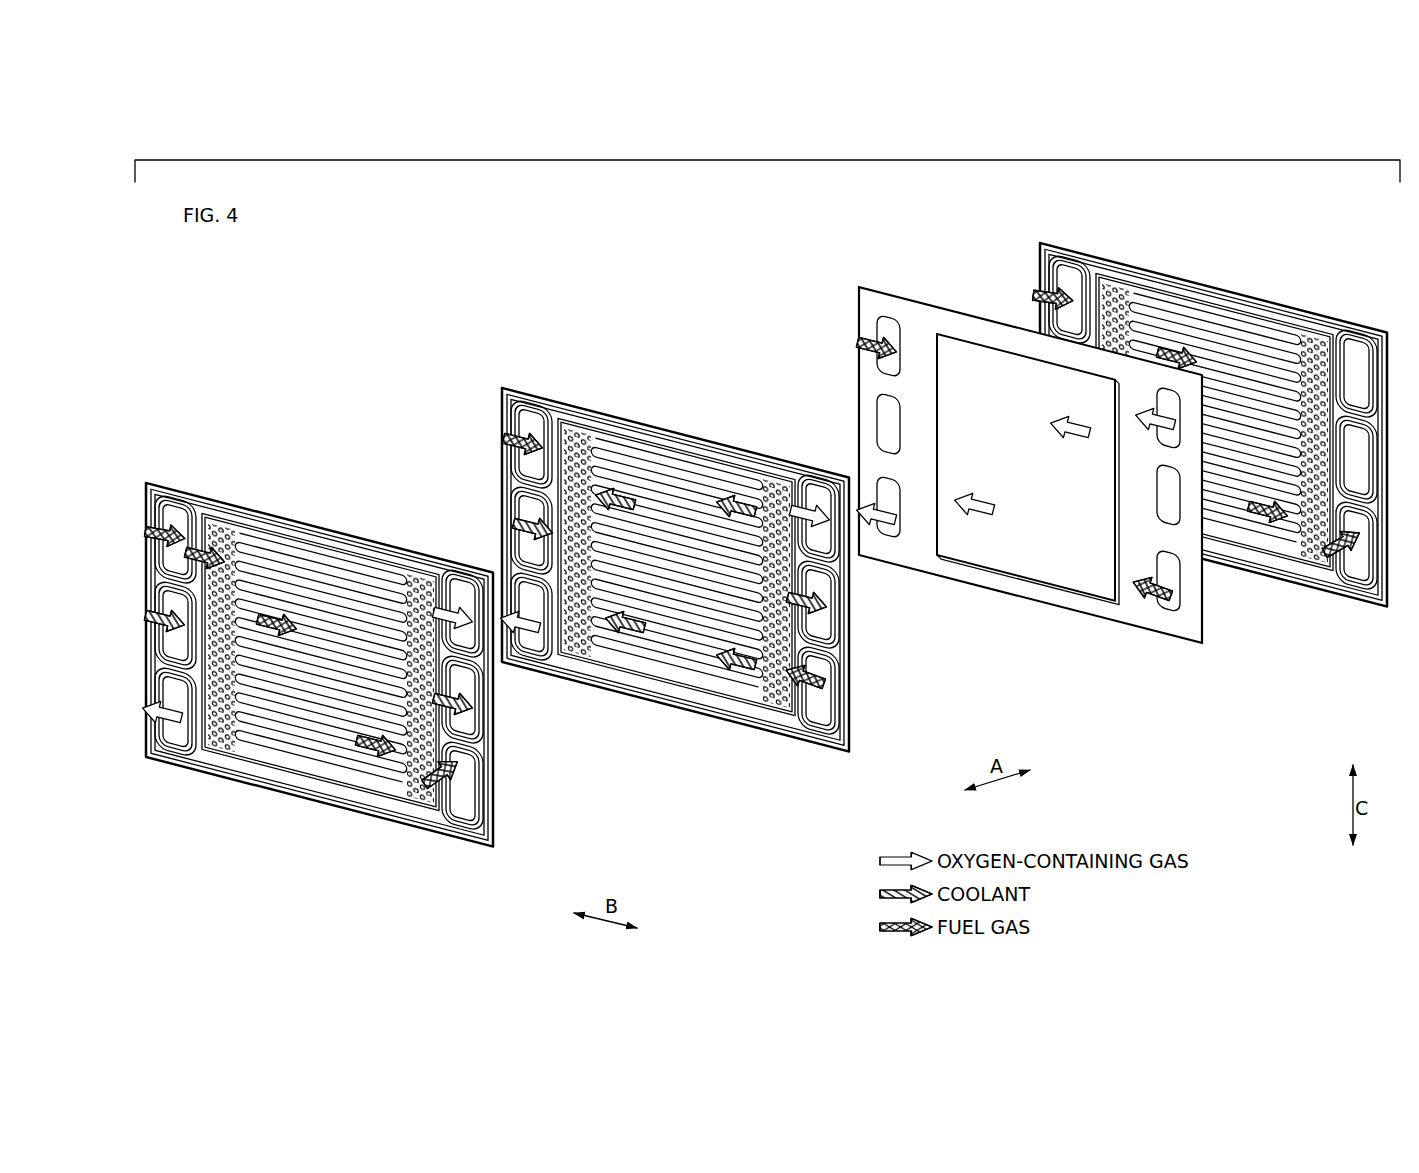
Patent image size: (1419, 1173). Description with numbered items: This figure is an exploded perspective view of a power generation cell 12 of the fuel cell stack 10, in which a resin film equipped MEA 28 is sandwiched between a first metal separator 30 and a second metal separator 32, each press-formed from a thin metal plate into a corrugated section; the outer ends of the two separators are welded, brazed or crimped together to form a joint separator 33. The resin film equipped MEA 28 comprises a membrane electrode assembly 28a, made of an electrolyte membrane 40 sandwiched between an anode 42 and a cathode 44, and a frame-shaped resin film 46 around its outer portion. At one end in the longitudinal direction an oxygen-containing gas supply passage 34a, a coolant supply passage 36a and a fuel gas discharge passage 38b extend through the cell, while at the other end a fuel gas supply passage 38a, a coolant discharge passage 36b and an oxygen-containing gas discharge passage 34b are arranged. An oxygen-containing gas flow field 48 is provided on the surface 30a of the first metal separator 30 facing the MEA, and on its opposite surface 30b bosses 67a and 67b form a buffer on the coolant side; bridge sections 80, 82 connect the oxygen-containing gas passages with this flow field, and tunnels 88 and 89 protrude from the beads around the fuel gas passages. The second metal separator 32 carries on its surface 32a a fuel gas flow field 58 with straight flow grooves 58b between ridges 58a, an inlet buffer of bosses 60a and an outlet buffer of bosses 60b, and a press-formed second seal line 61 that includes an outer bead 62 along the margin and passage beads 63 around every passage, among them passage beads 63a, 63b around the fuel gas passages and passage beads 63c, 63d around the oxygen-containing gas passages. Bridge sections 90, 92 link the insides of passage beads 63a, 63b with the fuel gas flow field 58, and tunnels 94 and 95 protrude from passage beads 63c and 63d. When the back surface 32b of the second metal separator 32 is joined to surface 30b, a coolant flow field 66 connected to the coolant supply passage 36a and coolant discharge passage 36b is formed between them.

The fuel cell stack 10 is at (372, 262).
The power generation cell 12 is at (334, 262).
The resin film equipped MEA 28 is at (860, 285).
The membrane electrode assembly 28a is at (1070, 580).
The first metal separator 30 is at (501, 383).
The surface 30a is at (667, 690).
The surface 30b is at (628, 677).
The second metal separator 32 is at (152, 480).
The surface 32a is at (303, 775).
The surface 32b is at (328, 807).
The joint separator 33 is at (362, 420).
The oxygen-containing gas supply passage 34a is at (1347, 305).
The oxygen-containing gas discharge passage 34b is at (165, 745).
The coolant supply passage 36a is at (443, 715).
The coolant discharge passage 36b is at (215, 690).
The fuel gas supply passage 38a is at (183, 505).
The fuel gas discharge passage 38b is at (467, 813).
The electrolyte membrane 40 is at (1023, 567).
The anode 42 is at (1123, 577).
The cathode 44 is at (993, 560).
The resin film 46 is at (973, 570).
The oxygen-containing gas flow field 48 is at (678, 473).
The fuel gas flow field 58 is at (372, 483).
The ridges 58a is at (300, 555).
The straight flow grooves 58b is at (350, 560).
The bosses 60a is at (230, 520).
The bosses 60b is at (427, 797).
The second seal line 61 is at (272, 783).
The outer bead 62 is at (260, 777).
The passage beads 63 is at (165, 525).
The passage bead 63a is at (174, 410).
The passage bead 63b is at (474, 868).
The passage bead 63c is at (482, 508).
The passage bead 63d is at (174, 835).
The coolant flow field 66 is at (633, 467).
The bosses 67a is at (775, 657).
The bosses 67b is at (578, 647).
The bridge section 80 is at (802, 483).
The bridge section 82 is at (555, 657).
The tunnels 88 is at (553, 427).
The tunnels 89 is at (832, 690).
The bridge section 90 is at (199, 505).
The bridge section 92 is at (442, 797).
The tunnels 94 is at (453, 580).
The tunnels 95 is at (200, 752).